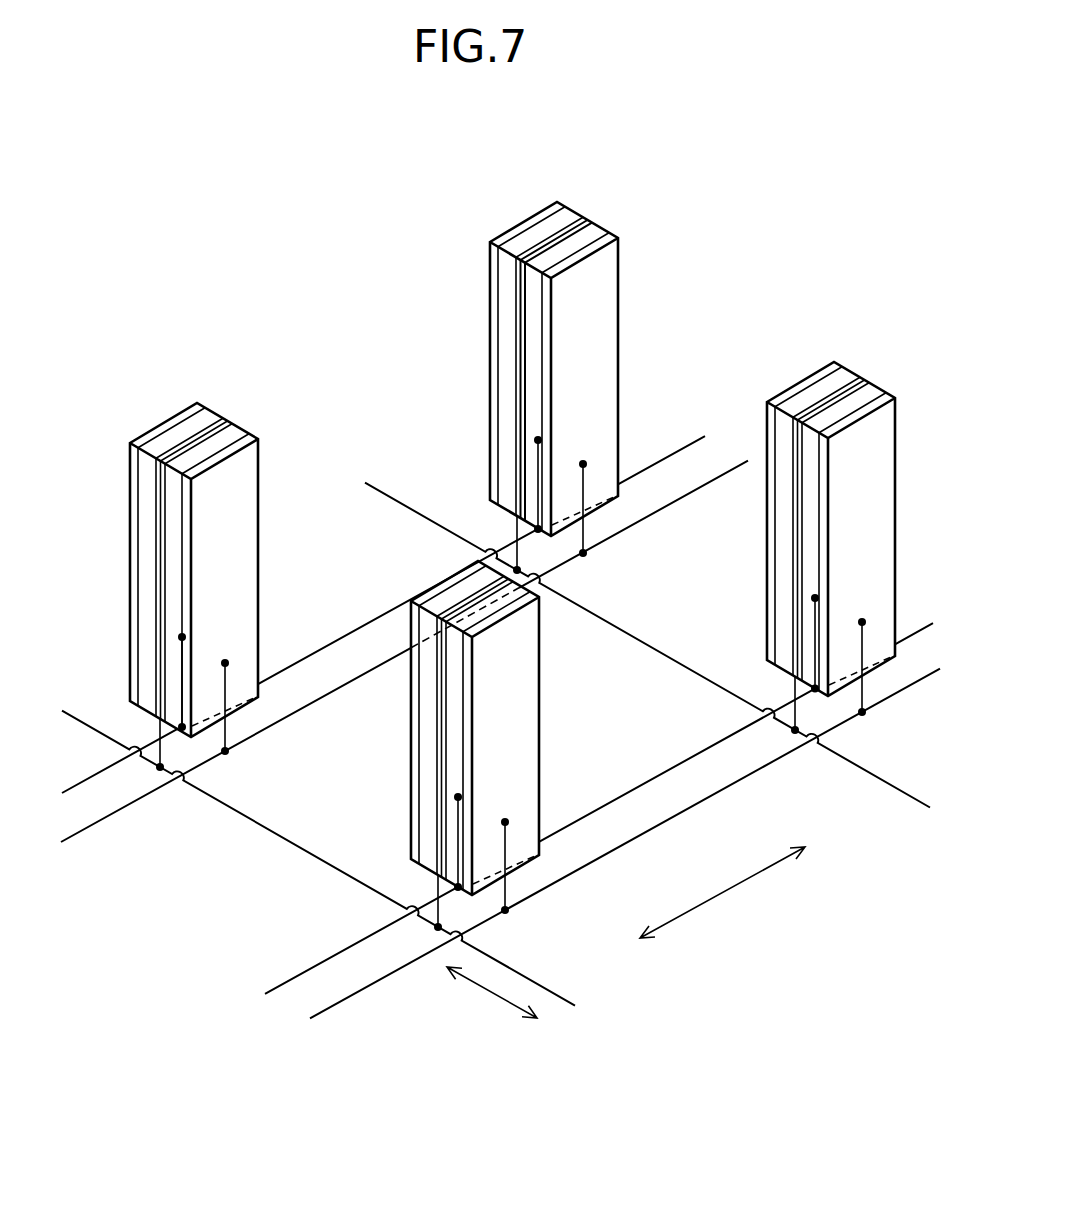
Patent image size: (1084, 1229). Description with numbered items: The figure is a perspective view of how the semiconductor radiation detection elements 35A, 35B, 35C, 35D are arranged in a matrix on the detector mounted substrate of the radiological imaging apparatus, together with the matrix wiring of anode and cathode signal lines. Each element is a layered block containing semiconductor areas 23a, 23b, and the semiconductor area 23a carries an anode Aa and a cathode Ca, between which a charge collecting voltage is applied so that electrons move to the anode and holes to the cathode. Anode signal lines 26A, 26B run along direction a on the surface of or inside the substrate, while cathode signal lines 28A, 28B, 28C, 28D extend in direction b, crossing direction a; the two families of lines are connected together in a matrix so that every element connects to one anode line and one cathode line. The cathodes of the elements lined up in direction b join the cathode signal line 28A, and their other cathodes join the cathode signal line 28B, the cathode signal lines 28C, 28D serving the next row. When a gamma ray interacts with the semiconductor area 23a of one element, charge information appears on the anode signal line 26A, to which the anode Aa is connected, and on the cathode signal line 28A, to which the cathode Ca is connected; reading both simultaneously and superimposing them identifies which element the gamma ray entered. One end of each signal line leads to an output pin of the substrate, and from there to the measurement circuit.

The semiconductor radiation detection element 35A is at (559, 187).
The semiconductor radiation detection element 35B is at (840, 351).
The semiconductor radiation detection element 35C is at (205, 389).
The semiconductor radiation detection element 35D is at (554, 677).
The semiconductor area 23a is at (566, 207).
The semiconductor area 23b is at (598, 226).
The anode Aa is at (530, 250).
The cathode Ca is at (494, 240).
The anode signal line 26A is at (632, 634).
The anode signal line 26B is at (283, 838).
The cathode signal line 28A is at (355, 630).
The cathode signal line 28B is at (346, 685).
The cathode signal line 28C is at (685, 758).
The cathode signal line 28D is at (673, 817).
The direction a is at (485, 992).
The direction b is at (722, 893).